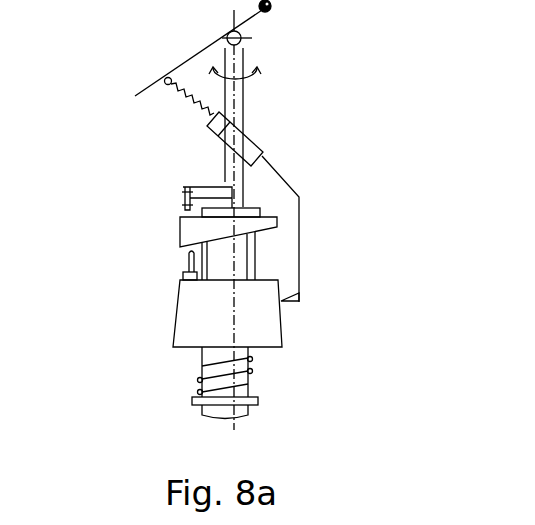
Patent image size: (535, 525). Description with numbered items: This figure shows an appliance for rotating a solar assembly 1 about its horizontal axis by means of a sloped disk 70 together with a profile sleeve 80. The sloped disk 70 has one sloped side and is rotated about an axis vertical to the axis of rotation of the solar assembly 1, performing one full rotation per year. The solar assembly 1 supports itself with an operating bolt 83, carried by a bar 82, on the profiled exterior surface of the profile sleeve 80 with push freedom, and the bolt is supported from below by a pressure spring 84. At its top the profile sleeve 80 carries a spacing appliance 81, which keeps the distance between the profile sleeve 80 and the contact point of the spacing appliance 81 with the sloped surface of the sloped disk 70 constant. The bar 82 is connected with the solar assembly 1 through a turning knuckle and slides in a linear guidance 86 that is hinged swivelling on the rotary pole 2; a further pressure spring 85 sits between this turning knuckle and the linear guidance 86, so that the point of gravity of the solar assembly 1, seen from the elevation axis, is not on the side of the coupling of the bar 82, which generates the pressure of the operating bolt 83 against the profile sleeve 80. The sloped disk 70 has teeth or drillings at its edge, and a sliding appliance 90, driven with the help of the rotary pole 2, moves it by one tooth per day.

The solar assembly 1 is at (138, 93).
The rotary pole 2 is at (243, 111).
The sloped disk 70 is at (190, 235).
The profile sleeve 80 is at (195, 330).
The spacing appliance 81 is at (188, 253).
The bar 82 is at (299, 264).
The operating bolt 83 is at (299, 302).
The pressure spring 84 is at (202, 368).
The pressure spring 85 is at (208, 108).
The linear guidance 86 is at (213, 131).
The sliding appliance 90 is at (184, 198).